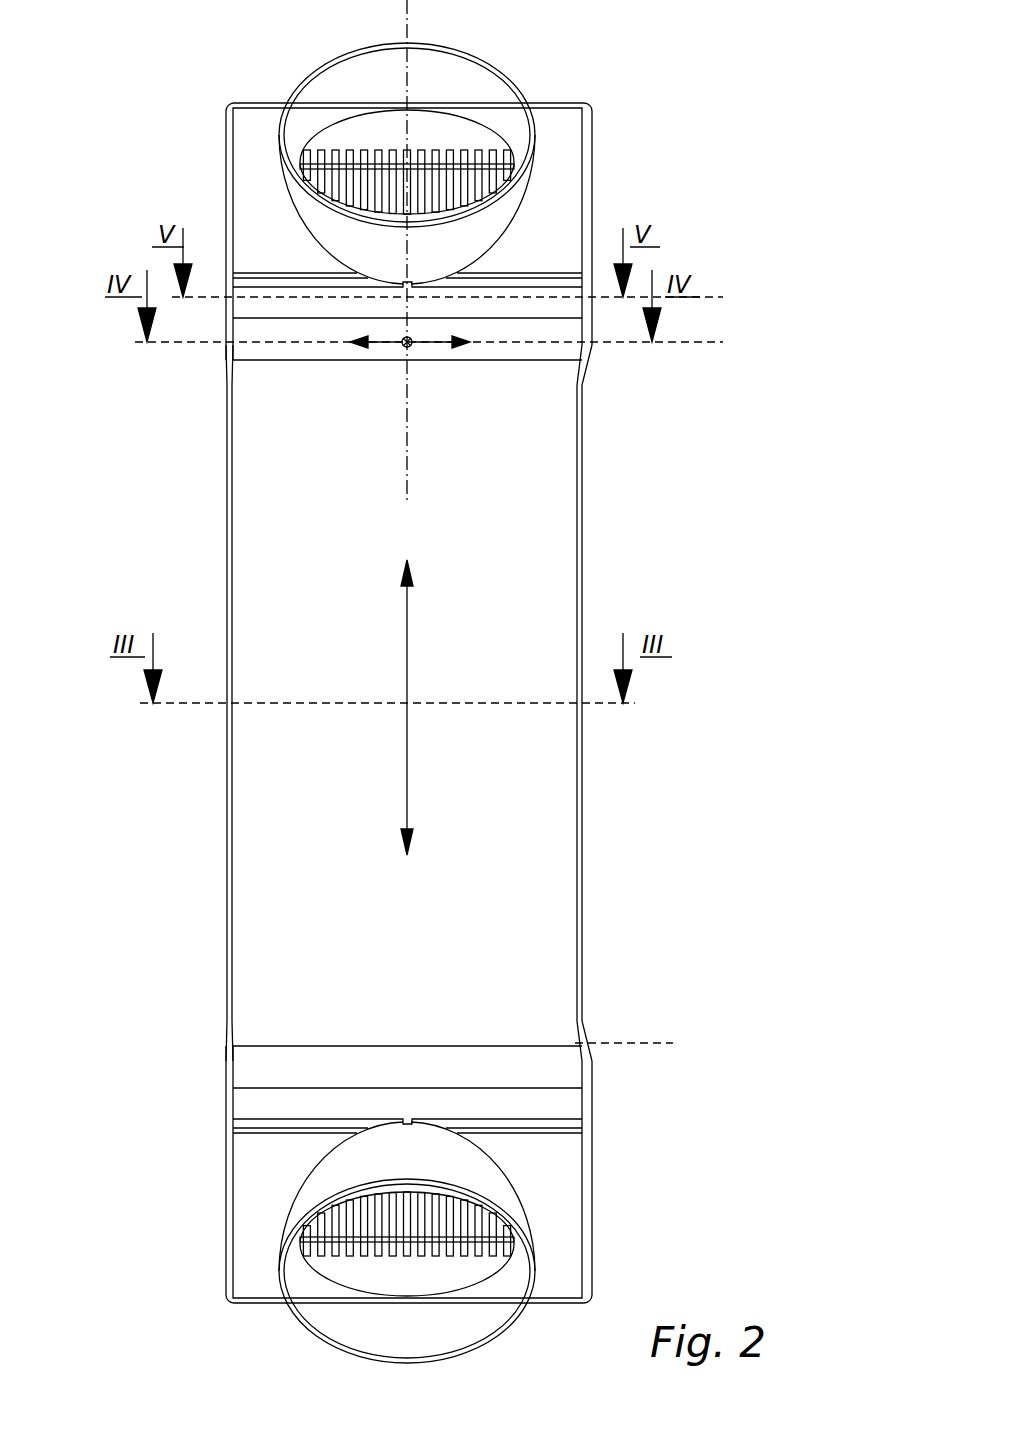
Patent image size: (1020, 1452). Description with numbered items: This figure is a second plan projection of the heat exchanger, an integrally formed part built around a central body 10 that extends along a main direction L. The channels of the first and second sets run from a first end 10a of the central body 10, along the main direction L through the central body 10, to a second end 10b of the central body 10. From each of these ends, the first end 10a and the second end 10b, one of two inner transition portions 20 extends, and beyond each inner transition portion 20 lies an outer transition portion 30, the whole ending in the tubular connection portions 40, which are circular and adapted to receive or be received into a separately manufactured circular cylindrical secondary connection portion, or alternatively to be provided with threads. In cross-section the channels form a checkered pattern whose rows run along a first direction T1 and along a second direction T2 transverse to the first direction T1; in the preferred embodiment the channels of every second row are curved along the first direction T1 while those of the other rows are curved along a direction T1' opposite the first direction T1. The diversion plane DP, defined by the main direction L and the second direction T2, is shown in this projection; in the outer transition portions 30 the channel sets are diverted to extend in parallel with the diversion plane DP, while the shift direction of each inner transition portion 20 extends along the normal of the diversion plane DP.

The central body 10 is at (673, 342).
The first end of the central body 10a is at (548, 360).
The second end of the central body 10b is at (367, 1045).
The inner transition portion 20 is at (727, 297).
The outer transition portion 30 is at (567, 305).
The tubular connection portion 40 is at (487, 63).
The diversion plane DP is at (408, 32).
The main direction L is at (418, 707).
The first direction T1 is at (446, 395).
The direction opposite the first direction T1' is at (362, 395).
The second direction T2 is at (410, 338).